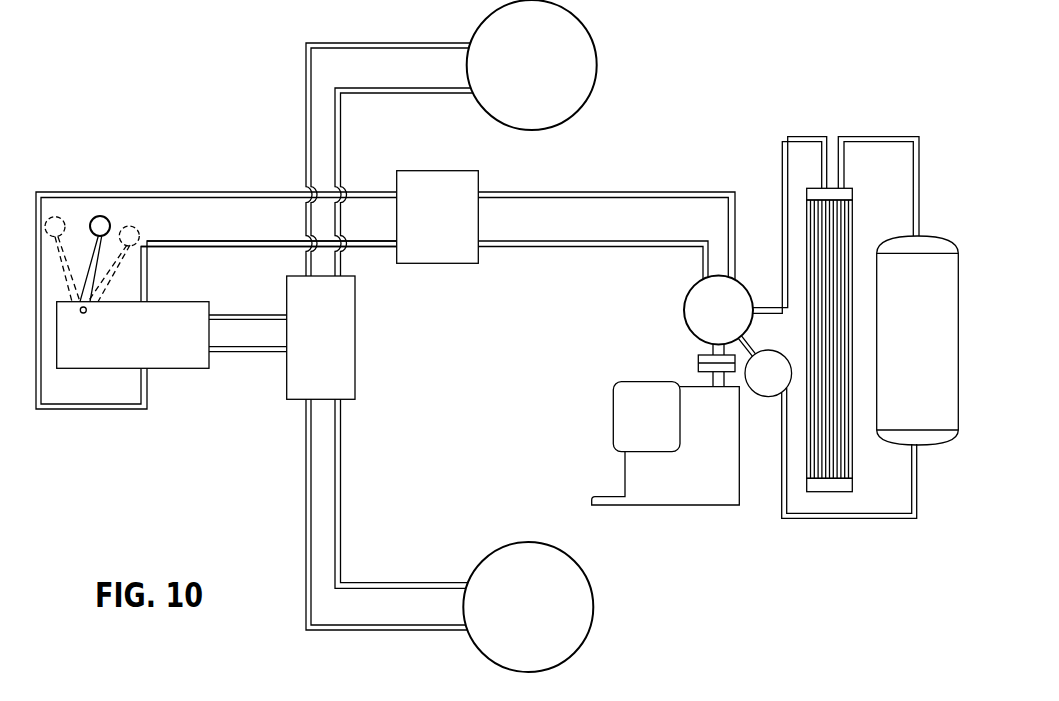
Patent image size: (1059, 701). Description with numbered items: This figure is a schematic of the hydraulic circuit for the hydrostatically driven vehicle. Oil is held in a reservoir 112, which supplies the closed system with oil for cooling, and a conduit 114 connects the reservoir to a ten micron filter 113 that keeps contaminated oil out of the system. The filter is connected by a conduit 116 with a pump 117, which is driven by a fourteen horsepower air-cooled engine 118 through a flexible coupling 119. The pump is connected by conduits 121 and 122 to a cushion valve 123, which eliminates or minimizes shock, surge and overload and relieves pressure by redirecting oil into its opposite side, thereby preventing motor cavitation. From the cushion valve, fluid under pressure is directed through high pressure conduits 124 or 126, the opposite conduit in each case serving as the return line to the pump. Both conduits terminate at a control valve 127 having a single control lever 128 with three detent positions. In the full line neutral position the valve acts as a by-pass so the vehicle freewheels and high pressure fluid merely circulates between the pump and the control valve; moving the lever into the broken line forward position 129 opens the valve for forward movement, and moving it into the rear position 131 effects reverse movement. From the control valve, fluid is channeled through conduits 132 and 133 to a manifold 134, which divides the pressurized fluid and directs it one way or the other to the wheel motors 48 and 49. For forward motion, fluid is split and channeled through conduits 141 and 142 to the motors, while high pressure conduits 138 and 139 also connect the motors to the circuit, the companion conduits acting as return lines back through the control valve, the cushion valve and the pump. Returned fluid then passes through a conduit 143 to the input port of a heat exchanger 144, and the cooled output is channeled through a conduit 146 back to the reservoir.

The motor 48 is at (515, 557).
The motor 49 is at (578, 55).
The reservoir 112 is at (900, 348).
The filter 113 is at (754, 384).
The conduit 114 is at (840, 518).
The conduit 116 is at (748, 347).
The pump 117 is at (735, 292).
The engine 118 is at (670, 487).
The flexible coupling 119 is at (702, 362).
The conduit 121 is at (648, 193).
The conduit 122 is at (641, 248).
The cushion valve 123 is at (433, 180).
The high pressure conduit 124 is at (232, 190).
The high pressure conduit 126 is at (222, 247).
The control valve 127 is at (157, 313).
The control lever 128 is at (103, 216).
The forward position 129 is at (64, 212).
The rear position 131 is at (138, 227).
The conduit 132 is at (240, 318).
The conduit 133 is at (258, 350).
The manifold 134 is at (340, 333).
The high pressure conduit 138 is at (306, 105).
The high pressure conduit 139 is at (305, 530).
The conduit 141 is at (392, 95).
The conduit 142 is at (408, 582).
The conduit 143 is at (782, 155).
The heat exchanger 144 is at (842, 217).
The conduit 146 is at (882, 135).